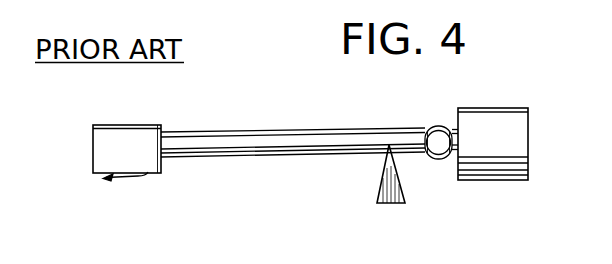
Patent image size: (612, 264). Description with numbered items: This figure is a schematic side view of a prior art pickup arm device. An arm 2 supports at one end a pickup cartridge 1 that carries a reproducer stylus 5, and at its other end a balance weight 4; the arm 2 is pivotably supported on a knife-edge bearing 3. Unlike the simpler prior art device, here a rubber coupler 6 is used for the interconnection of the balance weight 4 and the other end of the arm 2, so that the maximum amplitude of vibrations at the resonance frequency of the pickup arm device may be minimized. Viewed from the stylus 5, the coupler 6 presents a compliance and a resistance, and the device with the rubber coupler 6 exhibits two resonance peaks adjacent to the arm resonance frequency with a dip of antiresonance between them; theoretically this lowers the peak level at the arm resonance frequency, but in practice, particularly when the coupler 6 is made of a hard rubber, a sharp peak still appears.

The pickup cartridge 1 is at (131, 138).
The arm 2 is at (290, 132).
The knife-edge bearing 3 is at (381, 189).
The balance weight 4 is at (517, 125).
The reproducer stylus 5 is at (108, 180).
The rubber coupler 6 is at (437, 150).